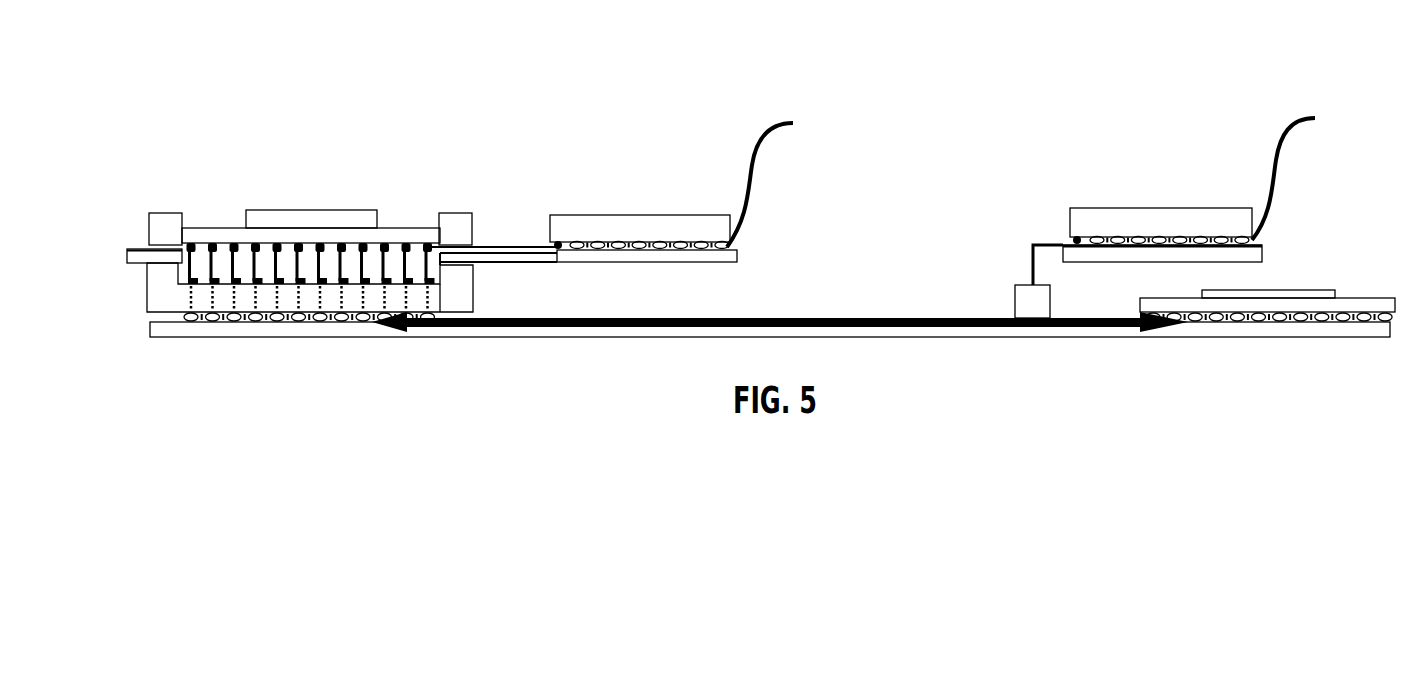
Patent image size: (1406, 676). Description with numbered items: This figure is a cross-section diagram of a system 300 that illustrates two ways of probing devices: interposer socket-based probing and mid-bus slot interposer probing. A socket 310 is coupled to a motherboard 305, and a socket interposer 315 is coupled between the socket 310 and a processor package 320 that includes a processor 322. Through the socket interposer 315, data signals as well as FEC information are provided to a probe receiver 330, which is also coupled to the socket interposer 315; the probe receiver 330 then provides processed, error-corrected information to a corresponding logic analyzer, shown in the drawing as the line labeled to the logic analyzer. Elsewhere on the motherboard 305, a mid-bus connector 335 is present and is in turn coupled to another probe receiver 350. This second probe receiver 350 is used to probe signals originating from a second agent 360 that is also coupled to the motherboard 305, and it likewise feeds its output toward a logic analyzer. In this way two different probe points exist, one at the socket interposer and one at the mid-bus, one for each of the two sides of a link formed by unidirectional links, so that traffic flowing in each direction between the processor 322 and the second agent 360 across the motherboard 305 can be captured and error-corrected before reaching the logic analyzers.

The system 300 is at (238, 63).
The motherboard 305 is at (797, 319).
The socket 310 is at (147, 297).
The socket interposer 315 is at (127, 253).
The processor package 320 is at (208, 230).
The processor 322 is at (305, 210).
The probe receiver 330 is at (647, 213).
The mid-bus connector 335 is at (1028, 283).
The probe receiver 350 is at (1175, 208).
The second agent 360 is at (1318, 290).